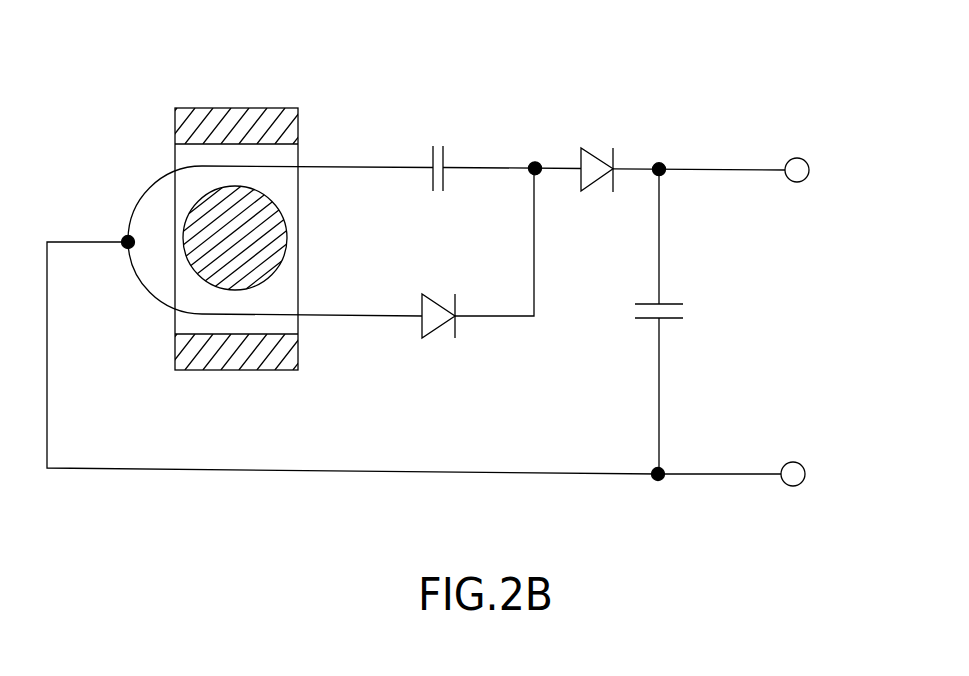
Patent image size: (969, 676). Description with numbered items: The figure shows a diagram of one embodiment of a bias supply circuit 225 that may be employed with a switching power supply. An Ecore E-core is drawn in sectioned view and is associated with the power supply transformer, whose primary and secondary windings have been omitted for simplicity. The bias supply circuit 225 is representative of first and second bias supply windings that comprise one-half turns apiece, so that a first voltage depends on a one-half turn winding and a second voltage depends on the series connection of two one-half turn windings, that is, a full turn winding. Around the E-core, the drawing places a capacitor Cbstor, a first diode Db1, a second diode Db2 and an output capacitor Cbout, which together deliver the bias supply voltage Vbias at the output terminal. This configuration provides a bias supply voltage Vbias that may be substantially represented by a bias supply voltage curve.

The bias supply circuit 225 is at (798, 45).
The Ecore E-core is at (262, 102).
The bias storage capacitor Cbstor is at (441, 146).
The first bias diode Db1 is at (438, 341).
The second bias diode Db2 is at (588, 145).
The bias output capacitor Cbout is at (701, 313).
The bias supply voltage Vbias is at (849, 164).